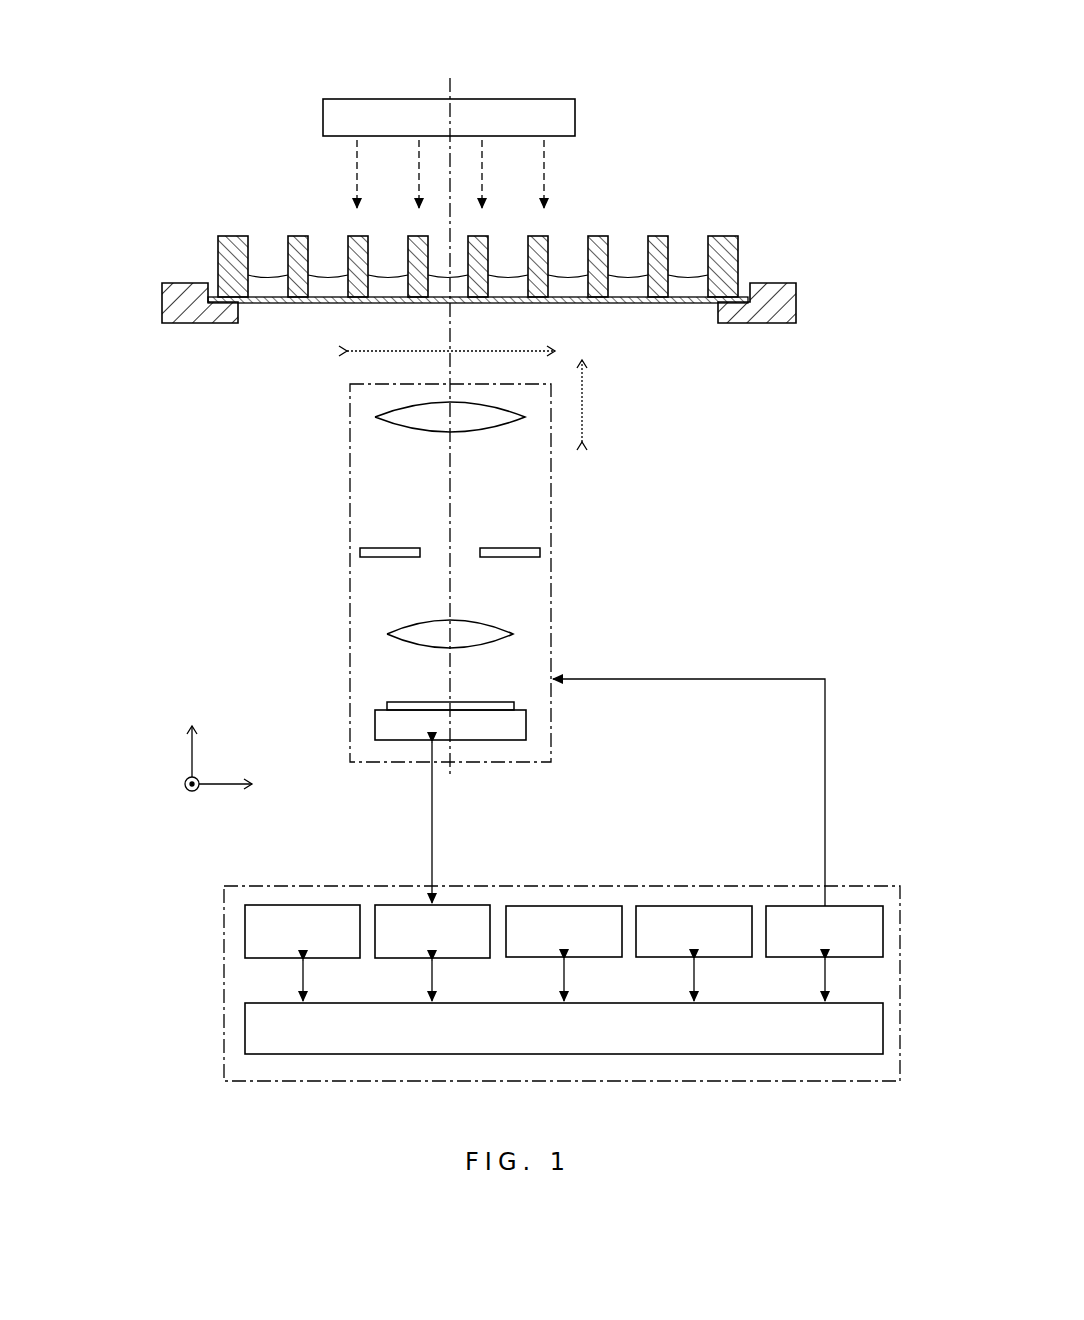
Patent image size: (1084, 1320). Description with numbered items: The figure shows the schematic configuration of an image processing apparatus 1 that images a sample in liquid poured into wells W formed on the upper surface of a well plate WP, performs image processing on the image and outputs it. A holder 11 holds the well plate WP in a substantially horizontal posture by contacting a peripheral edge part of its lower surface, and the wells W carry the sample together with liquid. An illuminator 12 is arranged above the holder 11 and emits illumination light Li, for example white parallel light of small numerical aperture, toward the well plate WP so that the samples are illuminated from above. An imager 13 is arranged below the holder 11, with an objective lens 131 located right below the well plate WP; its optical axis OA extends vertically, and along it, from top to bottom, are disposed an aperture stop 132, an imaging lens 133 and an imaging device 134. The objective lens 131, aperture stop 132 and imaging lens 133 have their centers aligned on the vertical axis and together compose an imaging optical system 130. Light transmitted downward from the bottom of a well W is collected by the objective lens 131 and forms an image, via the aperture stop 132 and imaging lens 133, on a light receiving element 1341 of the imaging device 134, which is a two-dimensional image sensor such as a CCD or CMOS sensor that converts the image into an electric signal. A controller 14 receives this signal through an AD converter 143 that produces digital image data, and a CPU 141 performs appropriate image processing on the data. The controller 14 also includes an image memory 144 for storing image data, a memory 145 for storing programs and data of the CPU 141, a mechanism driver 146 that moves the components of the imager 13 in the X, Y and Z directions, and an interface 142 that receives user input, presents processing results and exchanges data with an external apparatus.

The image processing apparatus 1 is at (214, 77).
The optical axis OA is at (447, 409).
The illuminator 12 is at (575, 117).
The illumination light Li is at (355, 180).
The well W is at (649, 240).
The well plate WP is at (519, 234).
The holder 11 is at (192, 323).
The imager 13 is at (553, 517).
The imaging optical system 130 is at (252, 443).
The objective lens 131 is at (413, 430).
The aperture stop 132 is at (372, 548).
The imaging lens 133 is at (403, 625).
The imaging device 134 is at (394, 692).
The light receiving element 1341 is at (403, 702).
The controller 14 is at (222, 935).
The CPU 141 is at (245, 1028).
The interface 142 is at (295, 905).
The AD converter 143 is at (405, 905).
The image memory 144 is at (546, 906).
The memory 145 is at (670, 906).
The mechanism driver 146 is at (780, 906).